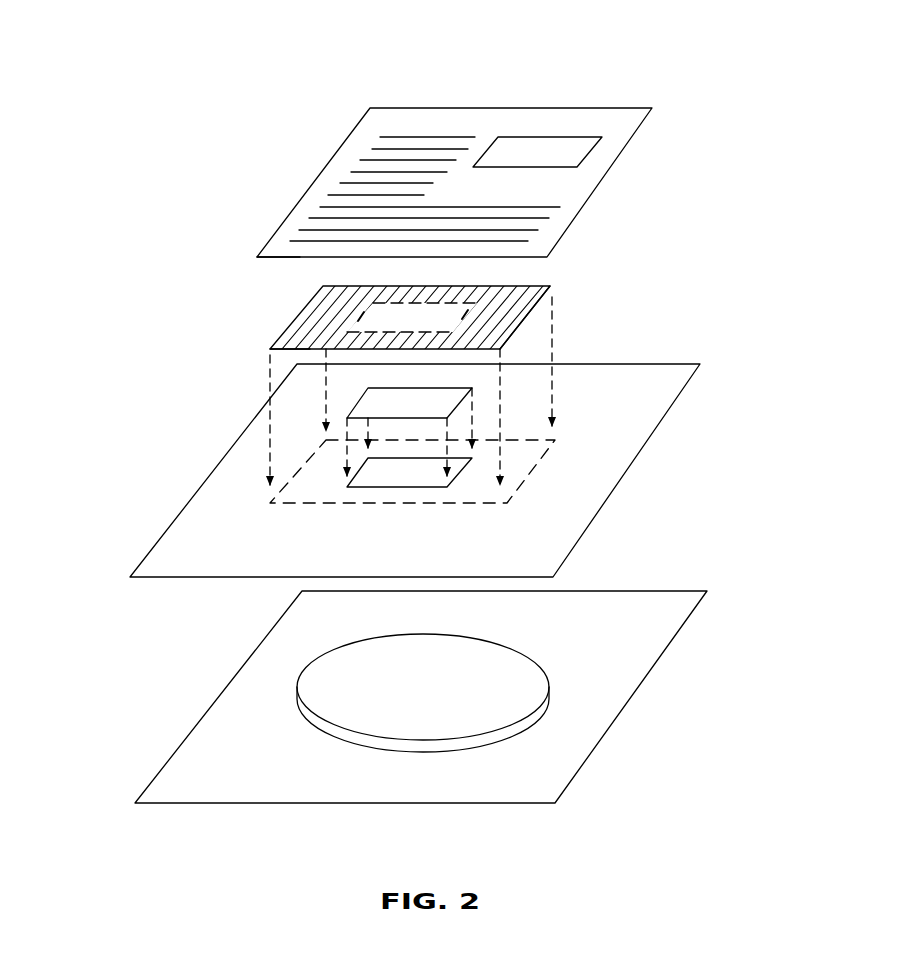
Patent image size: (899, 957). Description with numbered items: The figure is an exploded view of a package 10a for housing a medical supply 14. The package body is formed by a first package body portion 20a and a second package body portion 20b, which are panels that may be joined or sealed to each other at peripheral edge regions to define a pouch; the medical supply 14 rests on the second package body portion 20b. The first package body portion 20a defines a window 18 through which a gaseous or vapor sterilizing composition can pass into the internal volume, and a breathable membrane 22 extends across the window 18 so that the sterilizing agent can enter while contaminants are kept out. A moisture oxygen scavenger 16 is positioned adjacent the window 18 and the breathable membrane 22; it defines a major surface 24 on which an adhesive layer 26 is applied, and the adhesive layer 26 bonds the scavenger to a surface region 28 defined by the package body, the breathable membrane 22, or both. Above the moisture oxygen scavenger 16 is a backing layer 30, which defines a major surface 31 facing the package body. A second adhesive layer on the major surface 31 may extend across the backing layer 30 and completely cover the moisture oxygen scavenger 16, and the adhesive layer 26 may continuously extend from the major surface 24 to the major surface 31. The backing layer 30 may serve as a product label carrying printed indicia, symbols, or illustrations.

The package 10a is at (141, 70).
The backing layer 30 is at (620, 110).
The major surface 31 is at (262, 257).
The major surface 24 is at (273, 351).
The moisture oxygen scavenger 16 is at (532, 287).
The adhesive layer 26 is at (529, 327).
The first package body portion 20a is at (647, 364).
The breathable membrane 22 is at (472, 402).
The window 18 is at (352, 460).
The surface region 28 is at (518, 463).
The second package body portion 20b is at (575, 777).
The medical supply 14 is at (550, 695).